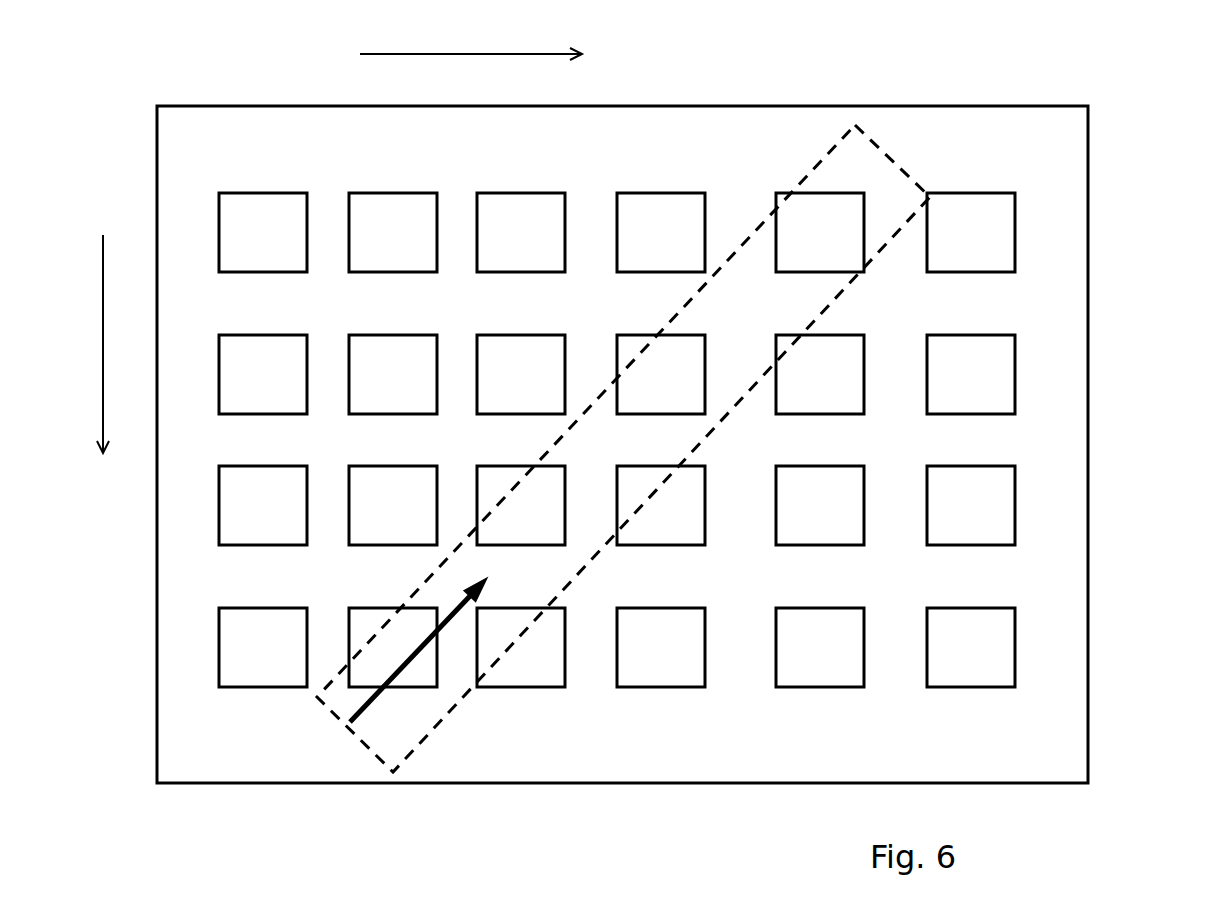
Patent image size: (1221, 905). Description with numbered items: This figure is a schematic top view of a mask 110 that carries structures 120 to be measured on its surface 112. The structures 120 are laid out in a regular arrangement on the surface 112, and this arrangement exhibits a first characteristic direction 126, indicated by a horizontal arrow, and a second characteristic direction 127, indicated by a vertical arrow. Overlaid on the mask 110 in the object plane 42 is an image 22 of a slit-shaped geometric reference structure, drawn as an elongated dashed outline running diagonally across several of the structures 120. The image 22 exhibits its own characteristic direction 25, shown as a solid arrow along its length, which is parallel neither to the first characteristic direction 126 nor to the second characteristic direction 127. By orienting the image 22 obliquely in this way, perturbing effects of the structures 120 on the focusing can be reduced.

The mask 110 is at (1090, 687).
The surface 112 is at (1040, 568).
The structures 120 is at (976, 228).
The image 22 is at (413, 698).
The characteristic direction 25 is at (358, 700).
The object plane 42 is at (725, 155).
The first characteristic direction 126 is at (471, 41).
The second characteristic direction 127 is at (78, 344).